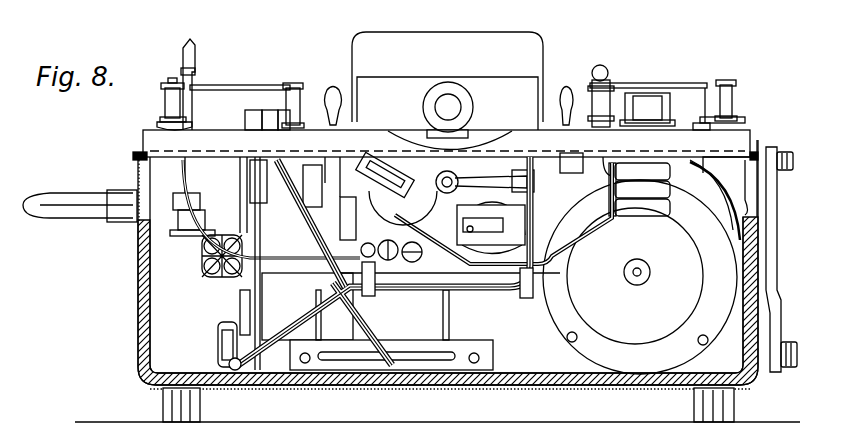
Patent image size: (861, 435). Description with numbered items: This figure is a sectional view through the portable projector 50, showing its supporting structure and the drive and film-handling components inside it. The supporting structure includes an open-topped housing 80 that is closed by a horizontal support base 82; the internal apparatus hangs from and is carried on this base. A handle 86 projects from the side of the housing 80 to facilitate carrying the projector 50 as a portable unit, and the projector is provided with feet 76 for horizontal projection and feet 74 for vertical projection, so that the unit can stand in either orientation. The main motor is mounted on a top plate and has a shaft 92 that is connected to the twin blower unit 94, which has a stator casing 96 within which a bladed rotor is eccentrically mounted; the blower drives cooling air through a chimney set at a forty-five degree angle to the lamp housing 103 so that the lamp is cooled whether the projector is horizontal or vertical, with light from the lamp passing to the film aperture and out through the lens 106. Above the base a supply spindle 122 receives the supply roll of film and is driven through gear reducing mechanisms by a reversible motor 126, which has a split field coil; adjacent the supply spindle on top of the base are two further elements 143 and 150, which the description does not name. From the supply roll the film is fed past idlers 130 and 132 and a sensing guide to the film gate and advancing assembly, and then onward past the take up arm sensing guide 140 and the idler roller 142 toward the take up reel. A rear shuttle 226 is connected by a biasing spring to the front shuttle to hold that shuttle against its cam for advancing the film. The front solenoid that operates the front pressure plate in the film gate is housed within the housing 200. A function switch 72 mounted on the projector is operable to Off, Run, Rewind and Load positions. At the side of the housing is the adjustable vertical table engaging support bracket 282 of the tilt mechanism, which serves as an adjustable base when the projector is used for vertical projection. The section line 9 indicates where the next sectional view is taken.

The section line 9- 9 is at (230, 364).
The projector 50 is at (90, 253).
The function switch 72 is at (660, 100).
The feet 74 is at (786, 148).
The feet 76 is at (187, 409).
The housing 80 is at (137, 298).
The horizontal support base 82 is at (748, 131).
The handle 86 is at (50, 195).
The shaft 92 is at (634, 285).
The twin blower unit 94 is at (740, 202).
The stator casing 96 is at (603, 354).
The lamp housing 103 is at (385, 50).
The lens 106 is at (450, 103).
The supply spindle 122 is at (197, 65).
The reversible motor 126 is at (330, 228).
The idler 130 is at (307, 107).
The idler 132 is at (277, 84).
The take up arm sensing guide 140 is at (733, 100).
The idler roller 142 is at (610, 102).
The base 143 is at (156, 115).
The bobbin 150 is at (172, 100).
The housing 200 is at (530, 80).
The rear shuttle 226 is at (270, 113).
The vertical table engaging support bracket 282 is at (770, 303).